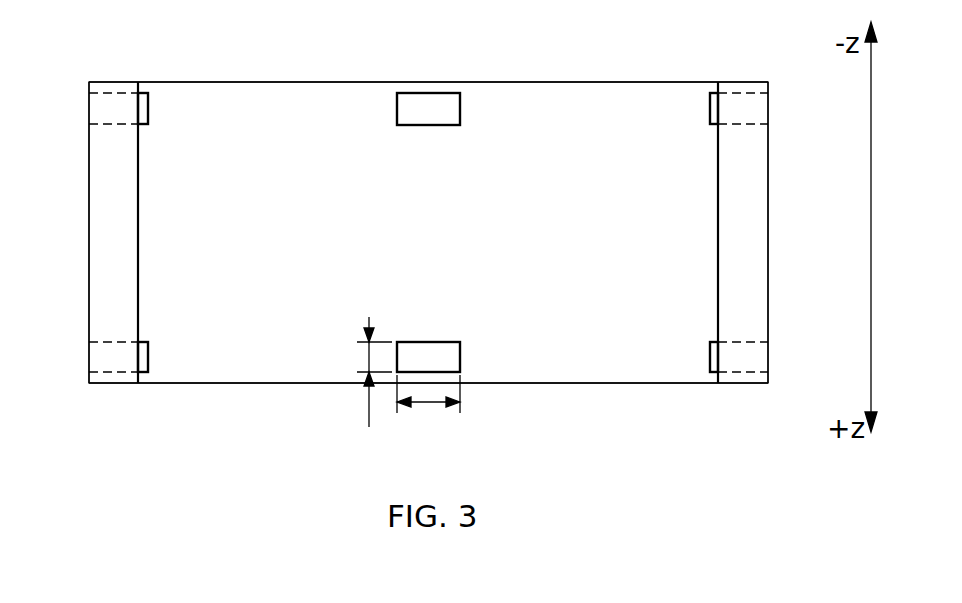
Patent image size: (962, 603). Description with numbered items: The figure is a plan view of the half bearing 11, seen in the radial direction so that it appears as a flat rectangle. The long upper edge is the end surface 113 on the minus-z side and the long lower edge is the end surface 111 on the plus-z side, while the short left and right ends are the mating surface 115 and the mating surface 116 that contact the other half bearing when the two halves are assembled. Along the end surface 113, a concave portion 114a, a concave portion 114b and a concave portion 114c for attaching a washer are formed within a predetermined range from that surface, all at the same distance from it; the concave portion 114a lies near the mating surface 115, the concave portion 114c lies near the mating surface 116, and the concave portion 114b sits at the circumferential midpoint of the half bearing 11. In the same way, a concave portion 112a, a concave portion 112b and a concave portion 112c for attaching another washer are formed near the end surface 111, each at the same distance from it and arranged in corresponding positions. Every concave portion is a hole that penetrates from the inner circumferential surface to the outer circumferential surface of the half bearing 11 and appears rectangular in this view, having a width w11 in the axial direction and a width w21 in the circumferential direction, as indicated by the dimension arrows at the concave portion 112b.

The half bearing 11 is at (577, 50).
The end surface 111 is at (583, 383).
The end surface 113 is at (327, 82).
The mating surface 115 is at (103, 230).
The mating surface 116 is at (754, 230).
The concave portion 114a is at (148, 106).
The concave portion 114b is at (458, 110).
The concave portion 114c is at (710, 107).
The concave portion 112a is at (148, 356).
The concave portion 112b is at (457, 358).
The concave portion 112c is at (710, 356).
The width in the axial direction w11 is at (351, 373).
The width in the circumferential direction w21 is at (428, 409).